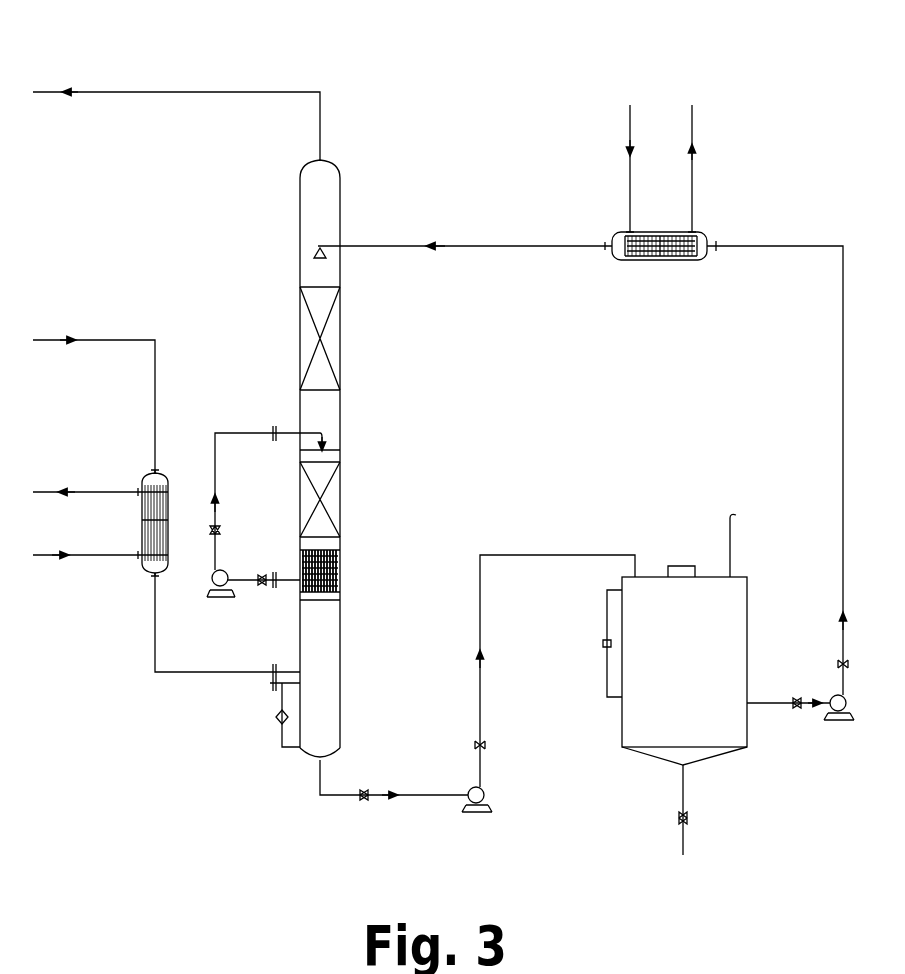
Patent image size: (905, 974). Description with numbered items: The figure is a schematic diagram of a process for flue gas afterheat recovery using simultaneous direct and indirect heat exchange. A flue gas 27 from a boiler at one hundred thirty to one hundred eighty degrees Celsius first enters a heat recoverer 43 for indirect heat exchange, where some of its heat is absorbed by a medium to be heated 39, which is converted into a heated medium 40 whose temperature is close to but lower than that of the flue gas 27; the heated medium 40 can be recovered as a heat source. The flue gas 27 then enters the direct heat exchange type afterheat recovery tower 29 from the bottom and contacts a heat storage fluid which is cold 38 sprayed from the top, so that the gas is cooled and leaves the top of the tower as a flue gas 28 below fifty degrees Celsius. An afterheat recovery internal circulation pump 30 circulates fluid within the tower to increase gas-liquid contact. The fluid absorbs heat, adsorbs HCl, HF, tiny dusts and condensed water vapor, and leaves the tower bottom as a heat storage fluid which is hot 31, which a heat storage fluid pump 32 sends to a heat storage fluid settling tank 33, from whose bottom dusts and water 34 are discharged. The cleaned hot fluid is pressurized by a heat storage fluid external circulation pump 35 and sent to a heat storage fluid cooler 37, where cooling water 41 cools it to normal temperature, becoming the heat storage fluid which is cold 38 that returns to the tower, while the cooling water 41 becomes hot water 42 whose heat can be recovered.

The flue gas from a boiler 27 is at (94, 376).
The flue gas after afterheat recovery 28 is at (176, 92).
The direct heat exchange type afterheat recovery tower 29 is at (340, 497).
The afterheat recovery internal circulation pump 30 is at (225, 575).
The heat storage fluid which is hot 31 is at (394, 762).
The heat storage fluid pump 32 is at (486, 790).
The heat storage fluid settling tank 33 is at (662, 582).
The dusts and water 34 is at (714, 810).
The heat storage fluid external circulation pump 35 is at (838, 695).
The heat storage fluid cooler 37 is at (673, 262).
The heat storage fluid which is cold 38 is at (461, 221).
The medium to be heated 39 is at (87, 527).
The heated medium 40 is at (87, 463).
The cooling water 41 is at (627, 141).
The hot water 42 is at (695, 141).
The heat recoverer for indirect heat exchange of a flue gas 43 is at (142, 568).